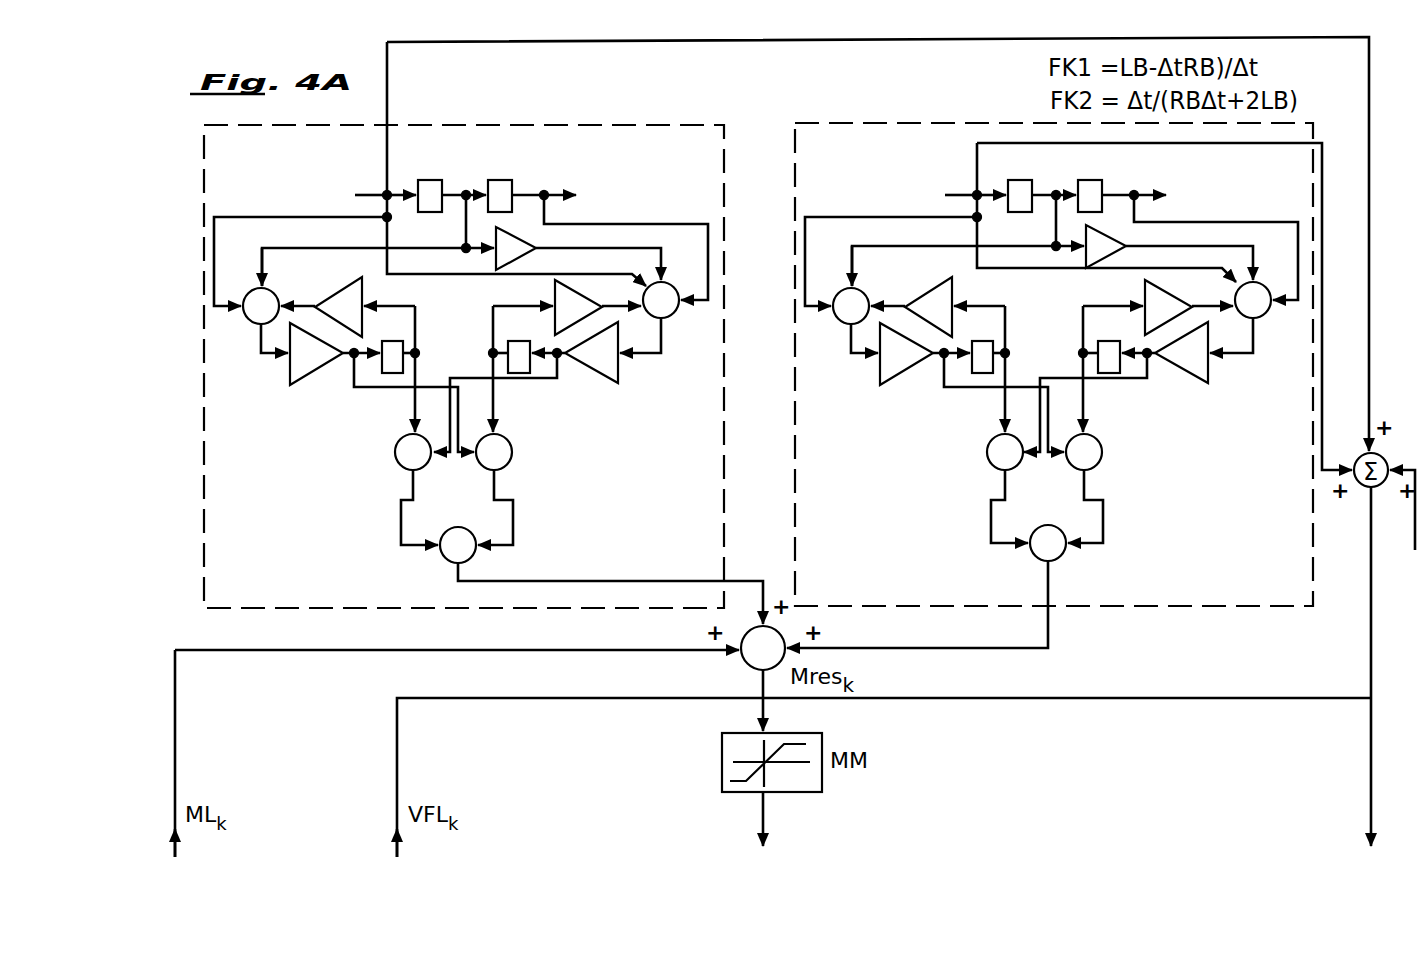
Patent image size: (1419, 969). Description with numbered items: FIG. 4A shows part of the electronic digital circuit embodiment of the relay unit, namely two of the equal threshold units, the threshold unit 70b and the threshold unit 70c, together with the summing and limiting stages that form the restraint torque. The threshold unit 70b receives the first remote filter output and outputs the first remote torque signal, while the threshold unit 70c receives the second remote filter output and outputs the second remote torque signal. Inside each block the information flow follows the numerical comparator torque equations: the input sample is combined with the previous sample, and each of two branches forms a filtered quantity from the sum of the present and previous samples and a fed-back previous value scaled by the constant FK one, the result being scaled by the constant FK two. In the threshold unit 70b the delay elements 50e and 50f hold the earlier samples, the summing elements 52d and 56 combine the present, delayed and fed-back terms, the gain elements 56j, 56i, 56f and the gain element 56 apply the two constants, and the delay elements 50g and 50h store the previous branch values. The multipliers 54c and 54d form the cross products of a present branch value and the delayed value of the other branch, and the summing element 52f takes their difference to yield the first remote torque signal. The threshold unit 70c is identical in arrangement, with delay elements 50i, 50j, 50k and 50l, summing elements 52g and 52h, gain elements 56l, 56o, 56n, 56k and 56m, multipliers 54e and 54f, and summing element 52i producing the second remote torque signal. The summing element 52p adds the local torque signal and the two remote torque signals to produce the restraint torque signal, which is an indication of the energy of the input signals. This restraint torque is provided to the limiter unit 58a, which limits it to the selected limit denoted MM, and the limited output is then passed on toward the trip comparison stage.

The delay element 50e is at (430, 180).
The delay element 50f is at (504, 180).
The delay element 50g is at (387, 374).
The delay element 50h is at (531, 374).
The delay element 50i is at (1020, 180).
The delay element 50j is at (1090, 180).
The delay element 50k is at (978, 374).
The delay element 50l is at (1122, 372).
The summing element 52d is at (254, 323).
The summing element 52f is at (458, 527).
The summing element 52g is at (846, 324).
The summing element 52h is at (1265, 316).
The summing element 52i is at (1060, 557).
The summing element 52p is at (745, 662).
The multiplier 54c is at (395, 455).
The multiplier 54d is at (512, 460).
The multiplier 54e is at (987, 452).
The multiplier 54f is at (1102, 452).
The gain element 56 is at (672, 316).
The gain element FK2 56f is at (290, 383).
The gain element FK1 56i is at (554, 292).
The gain element FK1 56j is at (500, 265).
The gain element FK2 56k is at (882, 383).
The gain element FK1 56l is at (926, 297).
The gain element FK2 56m is at (1222, 382).
The gain element FK1 56n is at (1144, 292).
The gain element 56o is at (1090, 258).
The limiter unit 58a is at (722, 752).
The threshold unit 70b is at (640, 124).
The threshold unit 70c is at (930, 122).